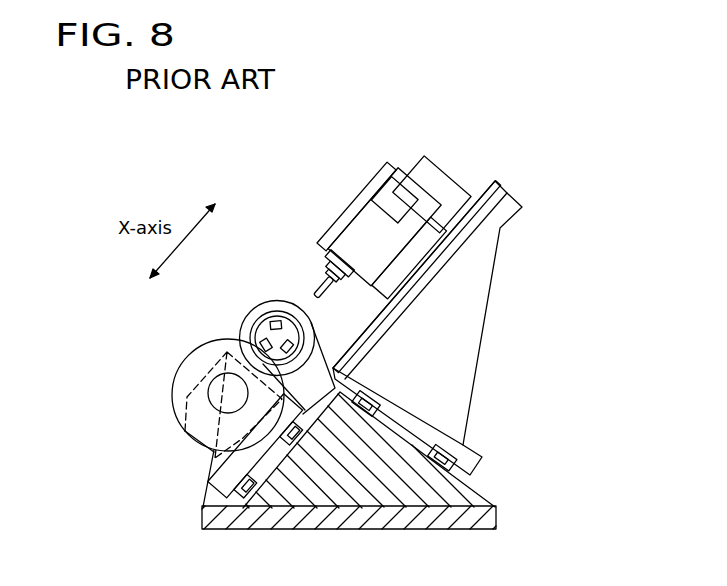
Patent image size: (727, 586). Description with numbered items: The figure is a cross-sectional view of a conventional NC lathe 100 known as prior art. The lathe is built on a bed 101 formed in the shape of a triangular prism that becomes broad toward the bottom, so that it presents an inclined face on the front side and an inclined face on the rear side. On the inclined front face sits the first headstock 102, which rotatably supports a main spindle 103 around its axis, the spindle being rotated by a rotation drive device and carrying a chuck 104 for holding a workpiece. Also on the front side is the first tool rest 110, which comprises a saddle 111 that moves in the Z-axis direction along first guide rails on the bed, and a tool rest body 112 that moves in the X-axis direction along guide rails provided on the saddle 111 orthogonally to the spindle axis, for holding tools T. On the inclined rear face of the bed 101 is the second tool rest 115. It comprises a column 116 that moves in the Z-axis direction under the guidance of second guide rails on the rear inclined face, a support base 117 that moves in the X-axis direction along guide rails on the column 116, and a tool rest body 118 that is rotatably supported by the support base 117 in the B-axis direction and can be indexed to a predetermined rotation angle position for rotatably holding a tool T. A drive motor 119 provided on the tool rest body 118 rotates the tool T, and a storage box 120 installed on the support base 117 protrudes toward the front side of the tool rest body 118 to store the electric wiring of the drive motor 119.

The NC lathe 100 is at (182, 162).
The bed 101 is at (474, 500).
The first headstock 102 is at (207, 498).
The main spindle 103 is at (262, 340).
The chuck 104 is at (262, 302).
The first tool rest 110 is at (156, 402).
The saddle 111 is at (213, 448).
The tool rest body 112 is at (174, 373).
The second tool rest 115 is at (522, 210).
The column 116 is at (478, 277).
The support base 117 is at (470, 200).
The tool rest body 118 is at (363, 220).
The drive motor 119 is at (390, 193).
The storage box 120 is at (340, 213).
The tool T is at (314, 291).